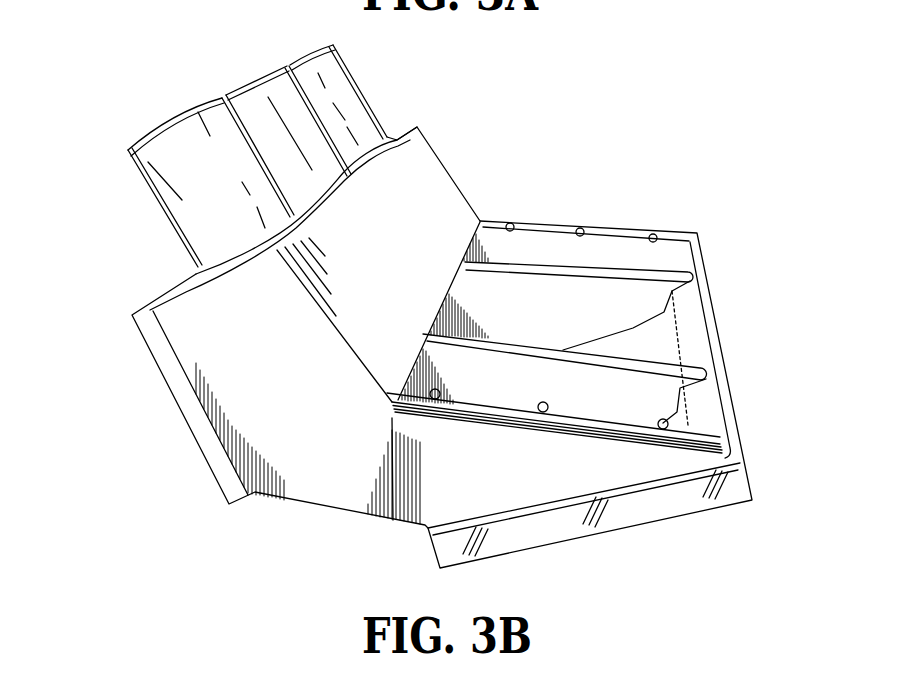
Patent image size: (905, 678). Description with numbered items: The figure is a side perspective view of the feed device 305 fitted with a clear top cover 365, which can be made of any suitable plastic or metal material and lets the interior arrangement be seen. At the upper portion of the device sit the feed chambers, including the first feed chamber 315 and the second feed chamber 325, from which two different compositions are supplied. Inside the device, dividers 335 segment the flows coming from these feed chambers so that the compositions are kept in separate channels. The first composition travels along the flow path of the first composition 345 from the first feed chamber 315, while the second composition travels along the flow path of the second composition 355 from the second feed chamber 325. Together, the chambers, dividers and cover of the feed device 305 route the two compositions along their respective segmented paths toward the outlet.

The feed device 305 is at (518, 80).
The first feed chamber 315 is at (218, 200).
The second feed chamber 325 is at (293, 128).
The dividers 335 is at (587, 353).
The flow path of the first composition 345 is at (529, 381).
The flow path of the second composition 355 is at (512, 303).
The clear top cover 365 is at (670, 352).